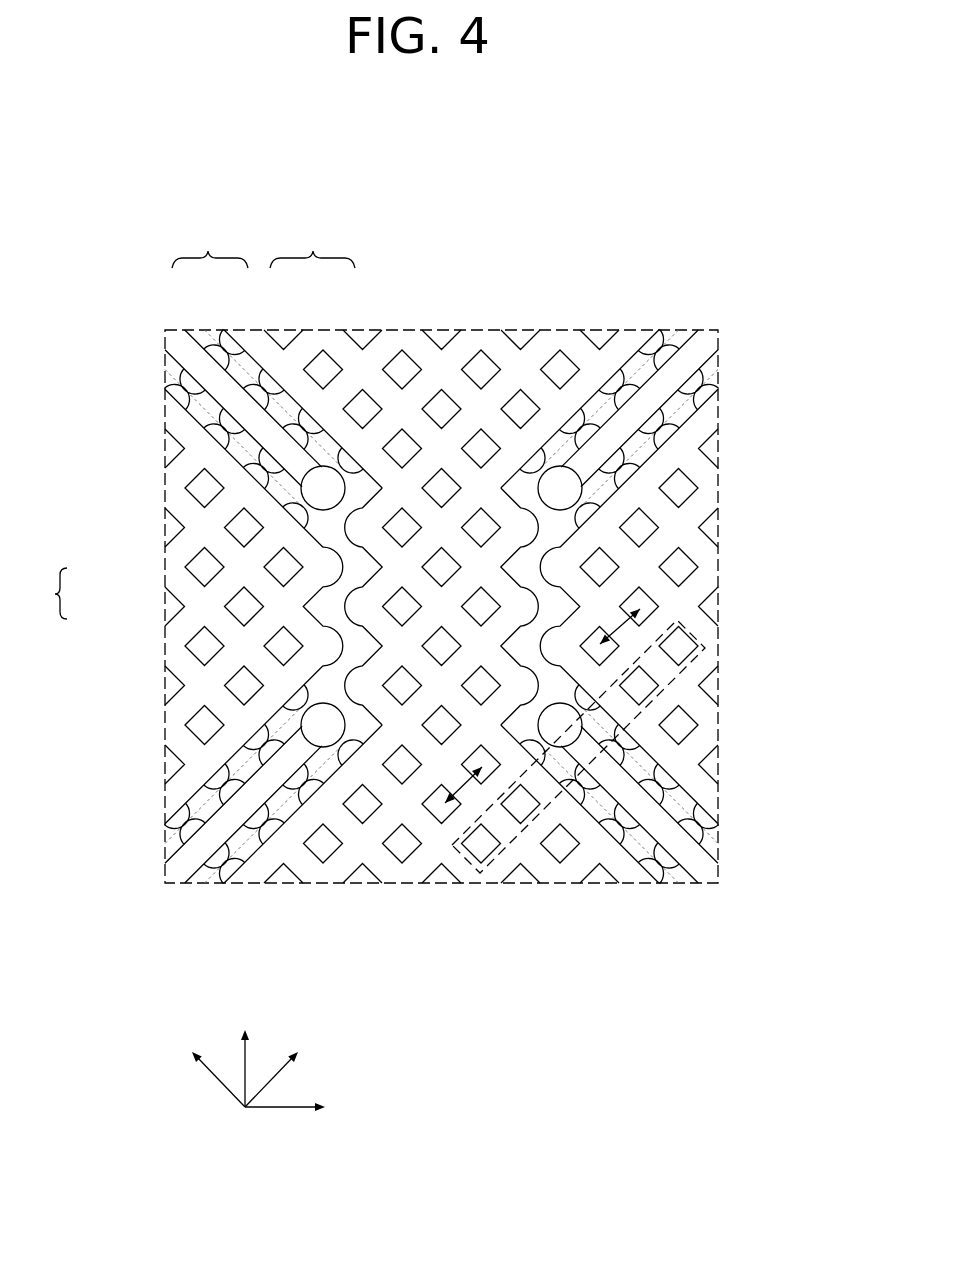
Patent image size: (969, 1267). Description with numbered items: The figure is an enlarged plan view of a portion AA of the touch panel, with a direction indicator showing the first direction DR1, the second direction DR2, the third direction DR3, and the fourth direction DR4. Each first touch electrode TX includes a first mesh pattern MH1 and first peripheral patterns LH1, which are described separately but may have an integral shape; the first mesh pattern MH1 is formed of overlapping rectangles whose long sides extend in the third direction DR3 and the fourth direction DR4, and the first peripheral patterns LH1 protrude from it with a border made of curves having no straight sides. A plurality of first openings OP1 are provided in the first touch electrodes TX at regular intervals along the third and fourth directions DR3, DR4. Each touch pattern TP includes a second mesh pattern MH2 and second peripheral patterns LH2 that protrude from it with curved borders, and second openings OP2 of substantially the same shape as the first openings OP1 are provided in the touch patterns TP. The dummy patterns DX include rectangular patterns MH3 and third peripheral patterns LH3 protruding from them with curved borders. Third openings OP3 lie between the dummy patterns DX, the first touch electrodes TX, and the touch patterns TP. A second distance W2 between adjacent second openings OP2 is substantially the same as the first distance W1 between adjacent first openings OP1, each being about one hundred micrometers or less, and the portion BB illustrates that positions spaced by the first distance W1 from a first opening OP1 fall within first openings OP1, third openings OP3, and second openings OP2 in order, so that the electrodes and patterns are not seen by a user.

The portion AA is at (674, 202).
The dummy pattern DX is at (210, 246).
The first touch electrode TX is at (312, 246).
The touch pattern TP is at (47, 593).
The first mesh pattern MH1 is at (335, 347).
The second mesh pattern MH2 is at (198, 606).
The rectangular pattern MH3 is at (178, 351).
The first peripheral pattern LH1 is at (268, 390).
The second peripheral pattern LH2 is at (323, 546).
The third peripheral pattern LH3 is at (222, 348).
The first opening OP1 is at (481, 373).
The second opening OP2 is at (205, 488).
The third opening OP3 is at (680, 410).
The portion BB is at (698, 628).
The first distance W1 is at (460, 782).
The second distance W2 is at (616, 623).
The first direction DR1 is at (242, 1054).
The second direction DR2 is at (305, 1106).
The third direction DR3 is at (283, 1064).
The fourth direction DR4 is at (206, 1064).